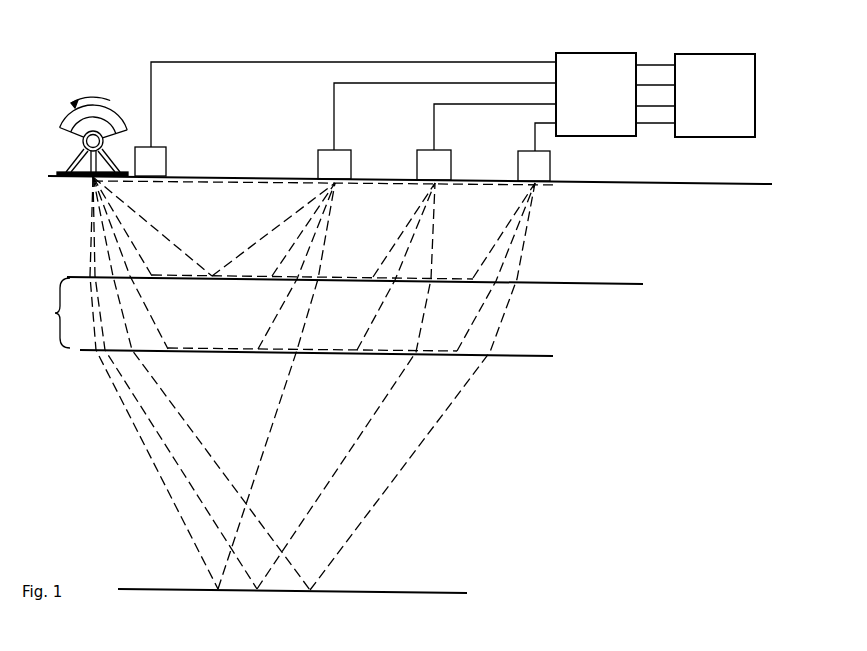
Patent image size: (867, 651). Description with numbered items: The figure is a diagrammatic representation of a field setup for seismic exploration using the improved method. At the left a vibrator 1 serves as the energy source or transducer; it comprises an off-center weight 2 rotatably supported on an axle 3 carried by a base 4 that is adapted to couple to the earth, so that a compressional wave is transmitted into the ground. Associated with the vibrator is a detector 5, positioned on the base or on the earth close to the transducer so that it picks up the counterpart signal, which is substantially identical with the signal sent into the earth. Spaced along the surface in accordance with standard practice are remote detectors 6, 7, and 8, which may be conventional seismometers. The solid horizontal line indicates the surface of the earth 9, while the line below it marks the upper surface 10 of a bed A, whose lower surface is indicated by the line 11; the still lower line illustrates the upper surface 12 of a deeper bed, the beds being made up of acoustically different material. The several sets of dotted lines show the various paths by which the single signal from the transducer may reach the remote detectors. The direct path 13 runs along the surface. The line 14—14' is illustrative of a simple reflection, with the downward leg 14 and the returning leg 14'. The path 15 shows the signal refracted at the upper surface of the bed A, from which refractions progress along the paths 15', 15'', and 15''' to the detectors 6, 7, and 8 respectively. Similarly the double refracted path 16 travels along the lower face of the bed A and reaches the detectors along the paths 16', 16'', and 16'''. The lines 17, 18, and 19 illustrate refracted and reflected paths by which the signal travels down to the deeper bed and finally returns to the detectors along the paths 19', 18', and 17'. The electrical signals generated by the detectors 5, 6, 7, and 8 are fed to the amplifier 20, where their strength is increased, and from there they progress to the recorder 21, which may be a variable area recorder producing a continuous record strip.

The vibrator 1 is at (74, 120).
The weight 2 is at (95, 113).
The axle 3 is at (83, 140).
The base 4 is at (67, 171).
The detector 5 is at (167, 150).
The remote detector 6 is at (352, 151).
The remote detector 7 is at (452, 151).
The remote detector 8 is at (551, 157).
The surface of the earth 9 is at (680, 184).
The upper surface of bed A 10 is at (643, 284).
The lower surface of bed A 11 is at (553, 356).
The upper surface of deeper bed 12 is at (465, 592).
The direct path 13 is at (212, 181).
The simple reflection path 14 is at (152, 226).
The simple reflection path 14' is at (273, 229).
The refracted path 15 is at (283, 228).
The refraction path 15' is at (301, 229).
The refraction path 15'' is at (404, 230).
The refraction path 15''' is at (503, 230).
The double refracted path 16 is at (275, 264).
The double refracted path 16' is at (294, 266).
The double refracted path 16'' is at (393, 266).
The double refracted path 16''' is at (492, 267).
The refracted and reflected path 17 is at (201, 383).
The refracted and reflected path 17' is at (422, 386).
The refracted and reflected path 18 is at (175, 383).
The refracted and reflected path 18' is at (346, 386).
The refracted and reflected path 19 is at (154, 383).
The refracted and reflected path 19' is at (276, 386).
The amplifier 20 is at (598, 52).
The recorder 21 is at (703, 53).
The bed A is at (53, 313).